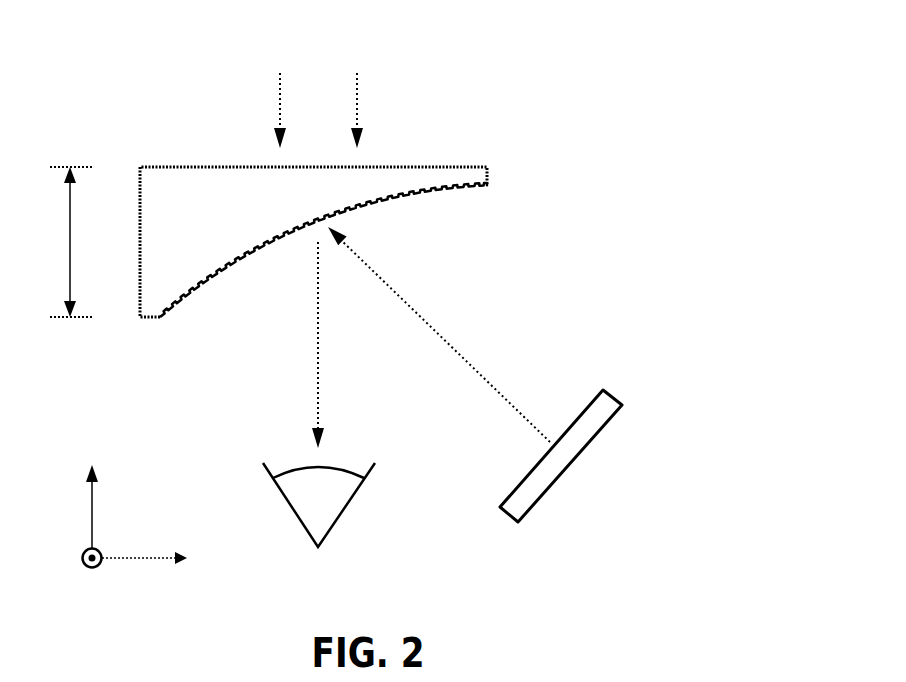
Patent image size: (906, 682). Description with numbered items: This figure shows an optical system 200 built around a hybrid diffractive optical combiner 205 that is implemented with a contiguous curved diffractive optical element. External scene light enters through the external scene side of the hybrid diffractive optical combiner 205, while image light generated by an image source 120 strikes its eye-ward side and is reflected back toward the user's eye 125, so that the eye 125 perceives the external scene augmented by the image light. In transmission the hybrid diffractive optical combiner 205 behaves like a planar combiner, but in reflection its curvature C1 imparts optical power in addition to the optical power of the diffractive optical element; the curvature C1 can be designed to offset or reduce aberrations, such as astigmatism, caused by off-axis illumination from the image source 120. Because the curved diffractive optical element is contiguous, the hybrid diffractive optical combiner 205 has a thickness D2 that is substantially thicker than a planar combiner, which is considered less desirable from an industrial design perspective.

The optical system 200 is at (644, 70).
The hybrid diffractive optical combiner 205 is at (487, 175).
The image source 120 is at (593, 438).
The eye 125 is at (334, 504).
The thickness D2 is at (68, 242).
The curvature C1 is at (224, 299).